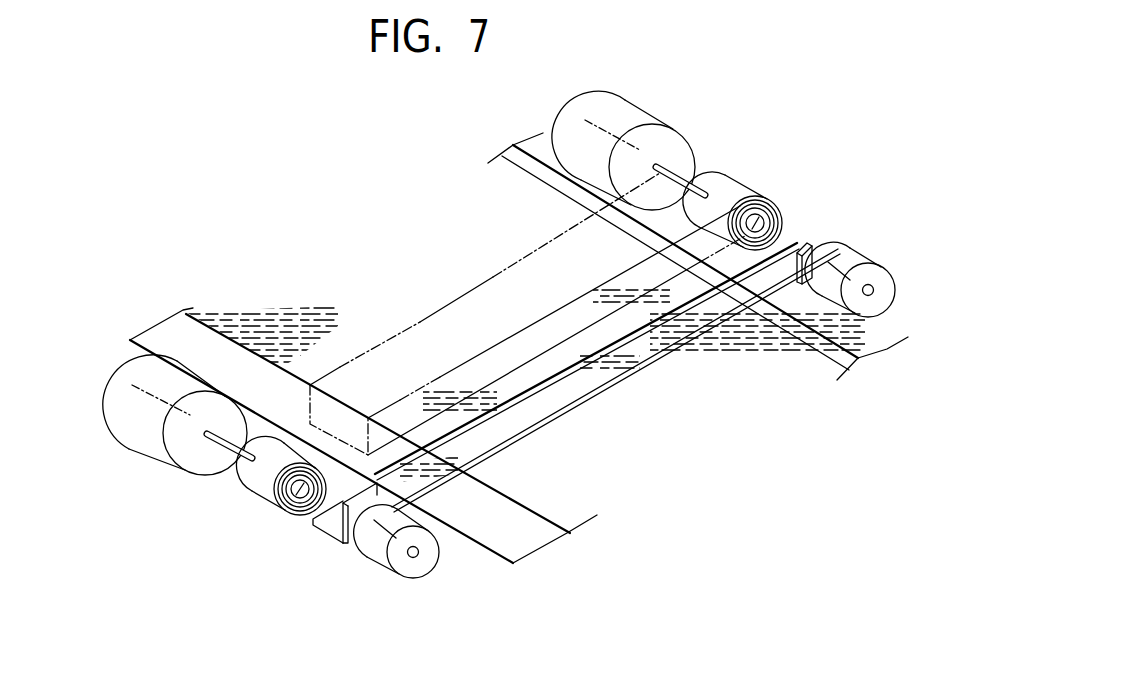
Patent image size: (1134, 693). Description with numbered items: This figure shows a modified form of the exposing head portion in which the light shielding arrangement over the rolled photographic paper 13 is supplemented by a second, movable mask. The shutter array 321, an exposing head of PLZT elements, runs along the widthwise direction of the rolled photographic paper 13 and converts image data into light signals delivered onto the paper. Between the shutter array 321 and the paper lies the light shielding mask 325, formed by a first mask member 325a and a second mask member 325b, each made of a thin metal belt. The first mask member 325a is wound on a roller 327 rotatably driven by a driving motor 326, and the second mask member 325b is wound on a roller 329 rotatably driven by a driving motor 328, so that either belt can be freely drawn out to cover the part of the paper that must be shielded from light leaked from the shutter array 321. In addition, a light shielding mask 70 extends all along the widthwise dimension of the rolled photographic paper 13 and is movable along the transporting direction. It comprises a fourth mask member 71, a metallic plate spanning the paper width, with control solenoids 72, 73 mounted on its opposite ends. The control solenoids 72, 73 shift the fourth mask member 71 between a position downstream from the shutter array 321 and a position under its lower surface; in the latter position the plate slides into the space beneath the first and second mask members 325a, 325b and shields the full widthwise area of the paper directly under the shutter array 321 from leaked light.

The rolled photographic paper 13 is at (493, 542).
The shutter array 321 is at (452, 313).
The light shielding mask 70 is at (700, 358).
The fourth mask member 71 is at (588, 390).
The driving motor 328 is at (637, 113).
The roller 329 is at (763, 205).
The driving motor 326 is at (143, 433).
The roller 327 is at (275, 506).
The light shielding mask 325 is at (215, 498).
The first mask member 325a is at (317, 523).
The second mask member 325b is at (800, 245).
The control solenoid 72 is at (363, 542).
The control solenoid 73 is at (838, 245).